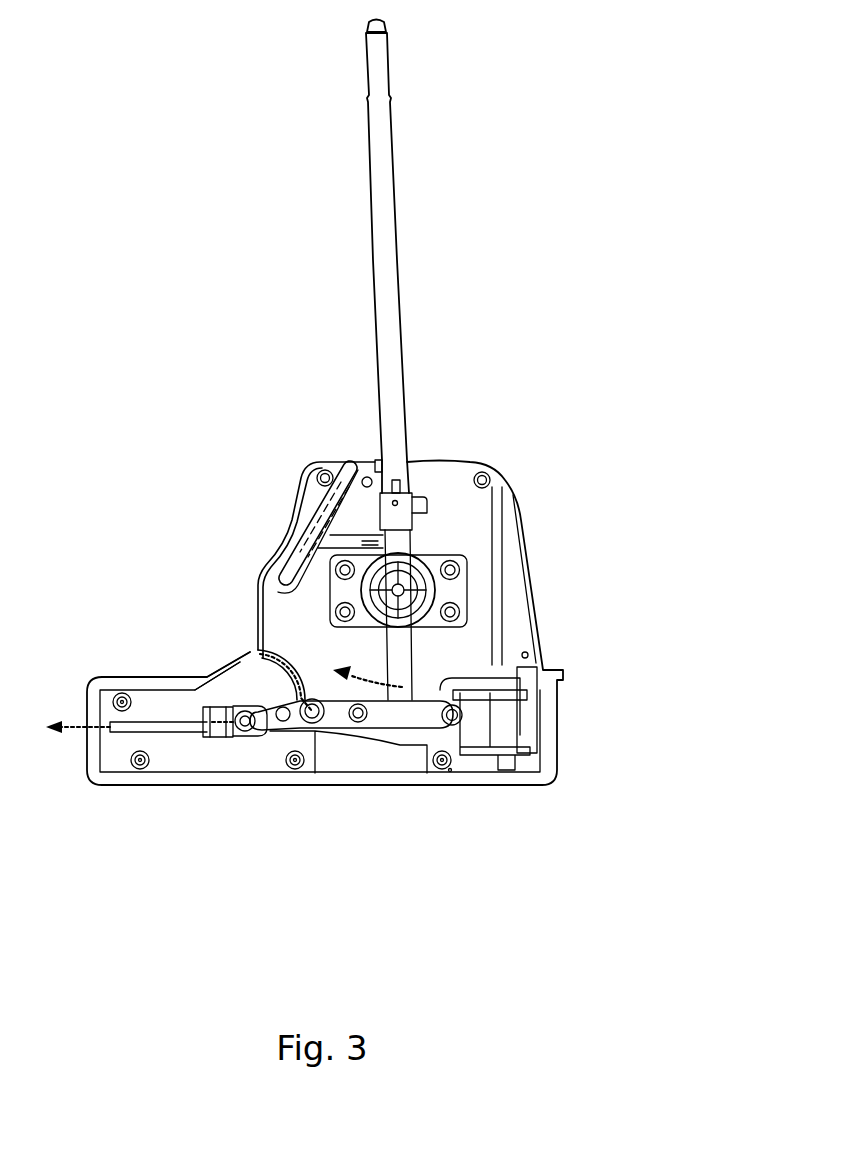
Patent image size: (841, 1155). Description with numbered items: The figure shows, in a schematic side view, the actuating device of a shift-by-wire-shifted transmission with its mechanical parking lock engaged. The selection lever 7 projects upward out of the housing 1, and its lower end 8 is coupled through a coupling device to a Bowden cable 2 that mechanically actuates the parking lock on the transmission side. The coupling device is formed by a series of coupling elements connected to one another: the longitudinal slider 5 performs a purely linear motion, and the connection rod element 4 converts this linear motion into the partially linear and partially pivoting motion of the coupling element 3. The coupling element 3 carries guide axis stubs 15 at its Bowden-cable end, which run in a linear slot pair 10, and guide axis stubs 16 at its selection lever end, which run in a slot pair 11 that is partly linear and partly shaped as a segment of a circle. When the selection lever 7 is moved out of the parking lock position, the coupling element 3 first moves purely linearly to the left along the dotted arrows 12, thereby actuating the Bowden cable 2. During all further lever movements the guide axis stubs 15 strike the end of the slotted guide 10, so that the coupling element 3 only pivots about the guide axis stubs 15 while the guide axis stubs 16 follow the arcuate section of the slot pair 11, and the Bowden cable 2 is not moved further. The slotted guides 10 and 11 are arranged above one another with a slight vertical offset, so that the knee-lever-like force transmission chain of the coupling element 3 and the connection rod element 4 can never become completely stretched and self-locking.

The housing 1 is at (608, 460).
The Bowden cable 2 is at (162, 723).
The coupling element 3 is at (283, 715).
The connection rod element 4 is at (332, 713).
The longitudinal slider 5 is at (405, 713).
The selection lever 7 is at (383, 222).
The lower end of the selection lever 8 is at (400, 658).
The linear slot pair 10 is at (229, 690).
The slot pair 11 is at (291, 655).
The dotted arrows 12 is at (253, 662).
The guide axis stubs 15 is at (245, 726).
The guide axis stubs 16 is at (312, 713).